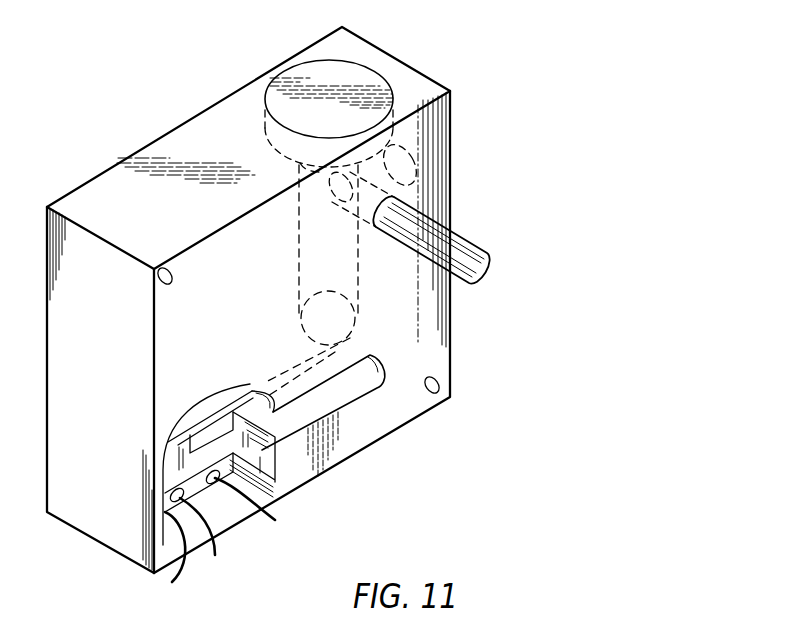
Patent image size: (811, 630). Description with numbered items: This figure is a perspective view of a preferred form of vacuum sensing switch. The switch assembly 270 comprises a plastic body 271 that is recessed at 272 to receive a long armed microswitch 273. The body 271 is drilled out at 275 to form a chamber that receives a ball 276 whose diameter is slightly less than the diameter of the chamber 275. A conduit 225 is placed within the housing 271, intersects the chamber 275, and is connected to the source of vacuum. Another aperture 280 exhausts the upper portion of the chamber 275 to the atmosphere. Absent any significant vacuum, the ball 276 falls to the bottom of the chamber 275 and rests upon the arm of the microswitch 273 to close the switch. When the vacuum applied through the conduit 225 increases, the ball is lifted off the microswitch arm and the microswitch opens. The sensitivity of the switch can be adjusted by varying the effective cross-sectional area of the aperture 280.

The switch assembly 270 is at (392, 48).
The plastic body 271 is at (452, 190).
The conduit 225 is at (468, 228).
The chamber 275 is at (298, 240).
The ball 276 is at (352, 307).
The aperture 280 is at (400, 150).
The recess 272 is at (273, 496).
The long armed microswitch 273 is at (218, 447).